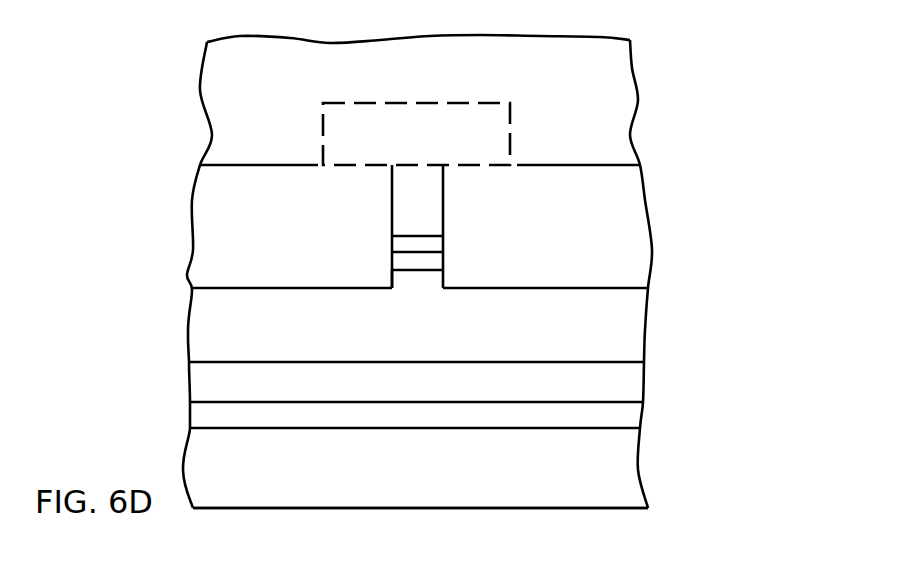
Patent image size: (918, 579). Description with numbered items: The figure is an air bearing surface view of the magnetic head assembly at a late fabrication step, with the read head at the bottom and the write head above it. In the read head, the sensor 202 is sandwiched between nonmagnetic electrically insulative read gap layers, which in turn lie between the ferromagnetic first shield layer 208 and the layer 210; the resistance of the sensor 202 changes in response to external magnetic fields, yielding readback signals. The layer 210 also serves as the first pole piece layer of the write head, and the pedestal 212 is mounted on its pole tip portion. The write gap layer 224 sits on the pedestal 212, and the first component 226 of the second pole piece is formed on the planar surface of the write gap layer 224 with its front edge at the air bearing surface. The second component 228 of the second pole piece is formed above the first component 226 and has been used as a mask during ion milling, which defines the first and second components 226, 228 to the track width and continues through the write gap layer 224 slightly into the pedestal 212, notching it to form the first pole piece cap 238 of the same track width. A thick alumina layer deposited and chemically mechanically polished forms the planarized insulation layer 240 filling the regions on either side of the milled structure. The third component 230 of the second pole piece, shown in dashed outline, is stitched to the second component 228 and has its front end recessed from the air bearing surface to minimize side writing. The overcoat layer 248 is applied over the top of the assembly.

The sensor 202 is at (430, 414).
The first shield layer 208 is at (416, 382).
The second shield layer / first pole piece layer 210 is at (418, 325).
The pedestal 212 is at (415, 468).
The write gap layer 224 is at (427, 268).
The first component of the second pole piece 226 is at (427, 245).
The second component of the second pole piece 228 is at (427, 194).
The third component of the second pole piece 230 is at (437, 135).
The first pole piece cap 238 is at (418, 280).
The planarized insulation layer 240 is at (223, 243).
The overcoat layer 248 is at (462, 63).